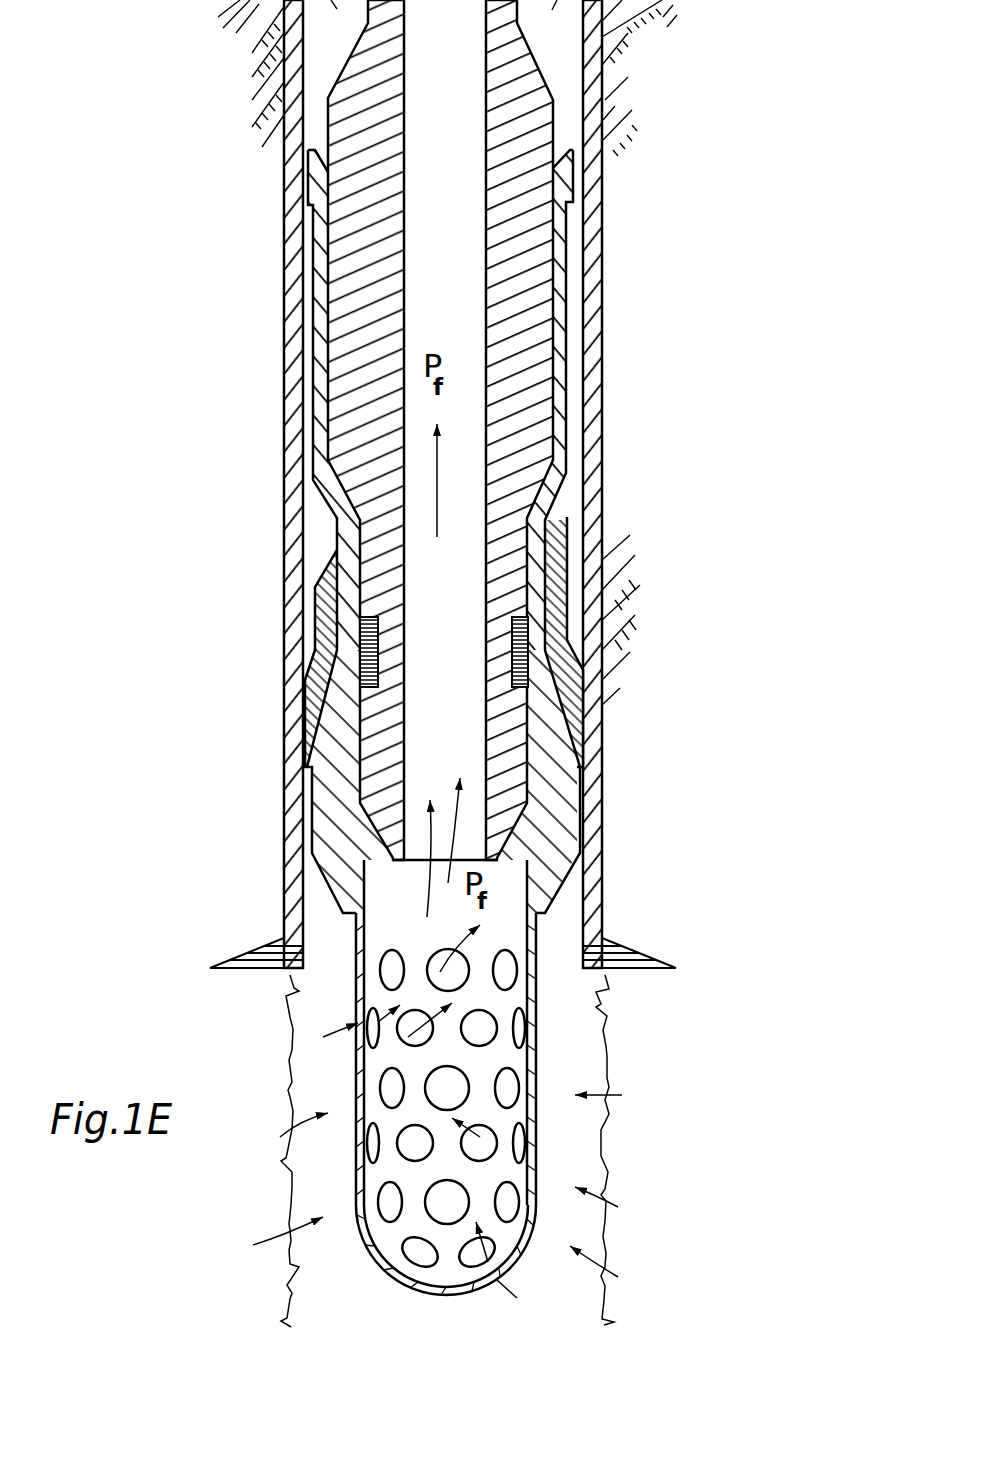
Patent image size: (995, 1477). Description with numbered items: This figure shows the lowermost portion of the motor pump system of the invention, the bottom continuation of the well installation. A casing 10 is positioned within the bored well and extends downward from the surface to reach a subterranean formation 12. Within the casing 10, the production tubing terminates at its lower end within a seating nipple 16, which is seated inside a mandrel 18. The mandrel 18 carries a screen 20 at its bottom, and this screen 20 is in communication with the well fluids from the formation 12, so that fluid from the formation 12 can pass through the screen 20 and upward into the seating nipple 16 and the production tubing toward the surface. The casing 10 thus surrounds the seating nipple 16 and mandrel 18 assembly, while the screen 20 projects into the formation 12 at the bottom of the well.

The casing 10 is at (593, 292).
The subterranean formation 12 is at (660, 1148).
The seating nipple 16 is at (528, 110).
The mandrel 18 is at (537, 548).
The screen 20 is at (537, 1032).